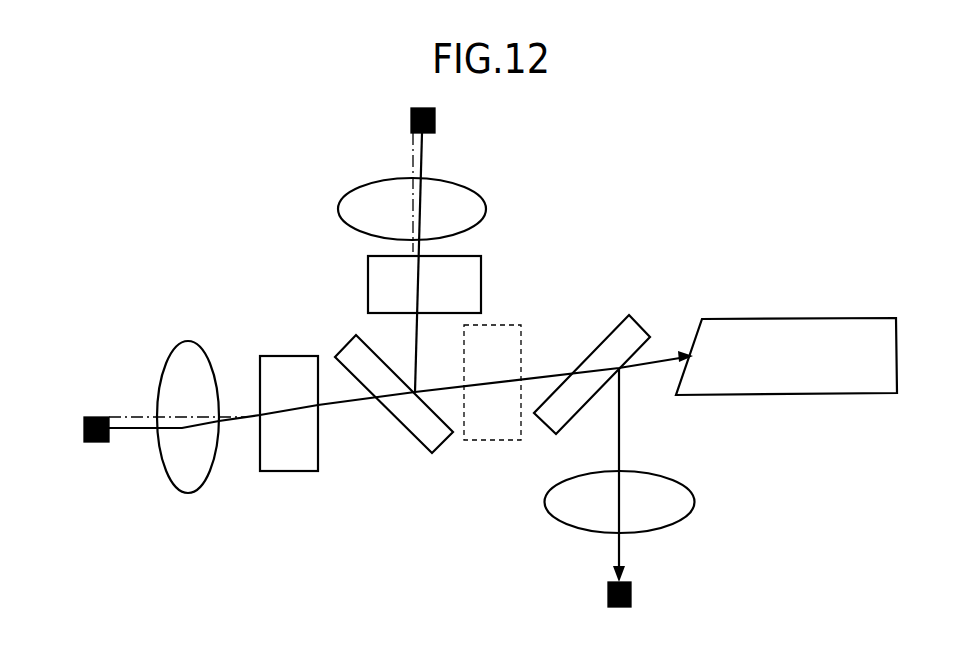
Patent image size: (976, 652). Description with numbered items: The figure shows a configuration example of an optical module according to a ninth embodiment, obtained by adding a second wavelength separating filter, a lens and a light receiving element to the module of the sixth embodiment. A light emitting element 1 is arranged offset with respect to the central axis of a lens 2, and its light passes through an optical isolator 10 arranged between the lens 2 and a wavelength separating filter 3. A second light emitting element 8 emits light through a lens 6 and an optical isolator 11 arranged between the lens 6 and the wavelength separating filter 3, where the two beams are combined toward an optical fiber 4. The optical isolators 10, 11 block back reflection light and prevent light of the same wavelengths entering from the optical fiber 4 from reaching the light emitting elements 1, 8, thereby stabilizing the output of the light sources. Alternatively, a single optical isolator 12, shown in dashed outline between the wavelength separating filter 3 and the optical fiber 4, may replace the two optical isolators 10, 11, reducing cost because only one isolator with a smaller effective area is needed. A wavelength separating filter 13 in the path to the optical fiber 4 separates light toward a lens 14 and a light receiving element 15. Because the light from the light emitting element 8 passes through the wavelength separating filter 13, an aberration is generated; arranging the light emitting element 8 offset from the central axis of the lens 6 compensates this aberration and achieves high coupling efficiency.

The light emitting element 1 is at (93, 417).
The lens 2 is at (188, 342).
The wavelength separating filter 3 is at (341, 352).
The optical fiber 4 is at (750, 318).
The lens 6 is at (486, 207).
The light emitting element 8 is at (435, 118).
The optical isolator 10 is at (278, 356).
The optical isolator 11 is at (481, 283).
The optical isolator 12 is at (505, 440).
The wavelength separating filter 13 is at (607, 338).
The lens 14 is at (694, 500).
The light receiving element 15 is at (631, 595).